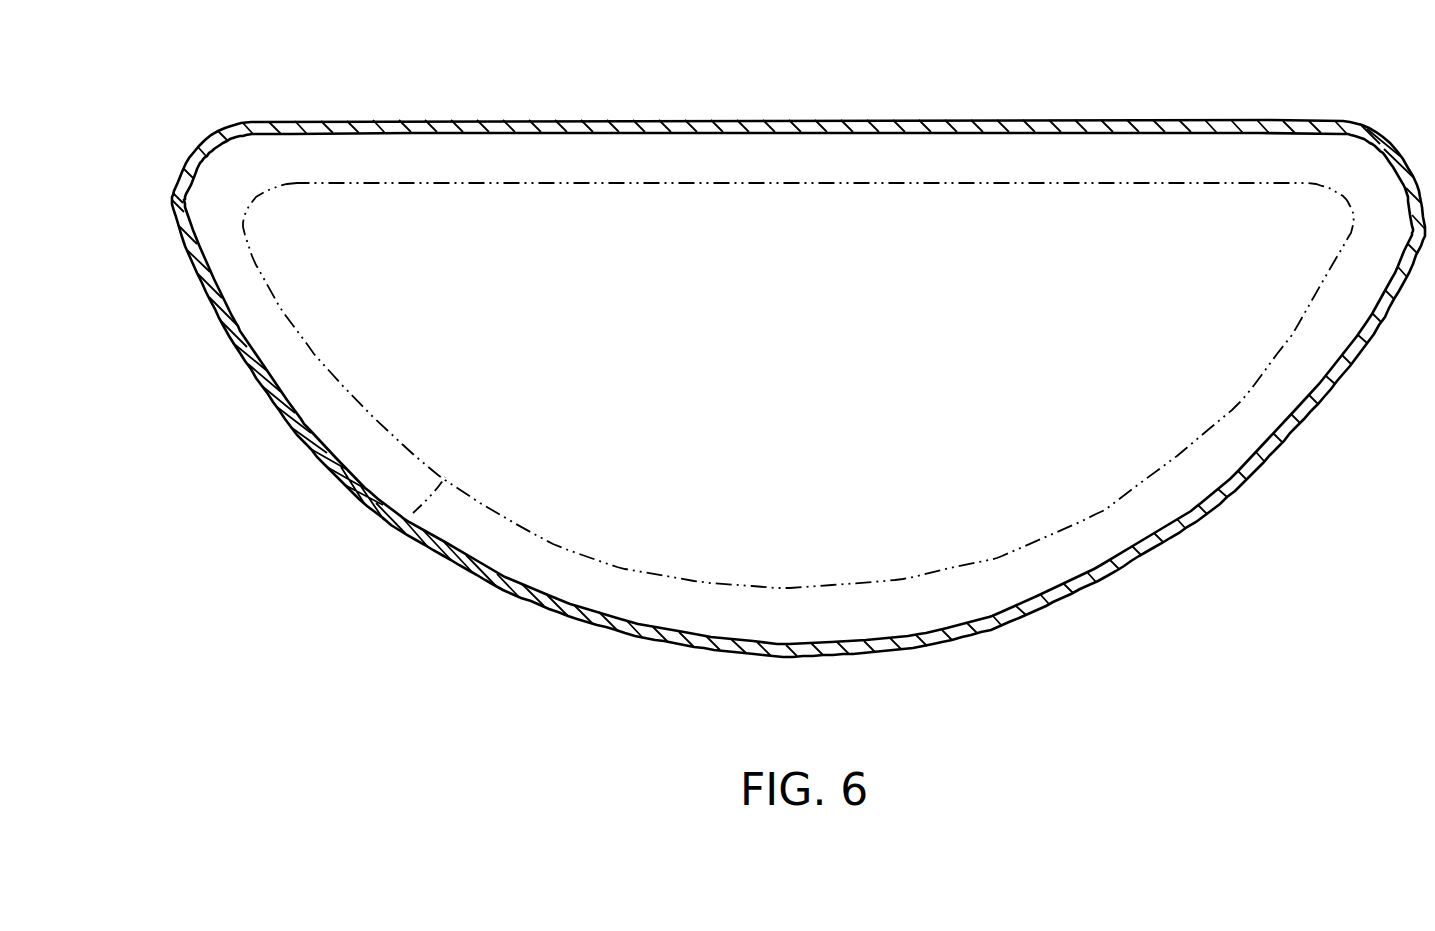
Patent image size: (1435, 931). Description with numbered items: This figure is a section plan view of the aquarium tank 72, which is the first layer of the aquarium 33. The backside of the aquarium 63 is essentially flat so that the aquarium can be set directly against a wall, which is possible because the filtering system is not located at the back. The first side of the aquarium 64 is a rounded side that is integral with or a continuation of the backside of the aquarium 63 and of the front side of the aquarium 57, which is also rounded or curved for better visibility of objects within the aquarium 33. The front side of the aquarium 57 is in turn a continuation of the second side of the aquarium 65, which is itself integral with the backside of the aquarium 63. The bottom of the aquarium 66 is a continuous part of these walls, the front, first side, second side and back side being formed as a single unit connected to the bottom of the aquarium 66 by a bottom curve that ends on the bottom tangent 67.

The aquarium 33 is at (1012, 118).
The backside of the aquarium 63 is at (697, 118).
The aquarium tank 72 is at (1123, 118).
The first side of the aquarium 64 is at (1413, 150).
The second side of the aquarium 65 is at (197, 148).
The front side of the aquarium 57 is at (582, 618).
The bottom of the aquarium 66 is at (403, 373).
The bottom tangent 67 is at (400, 525).